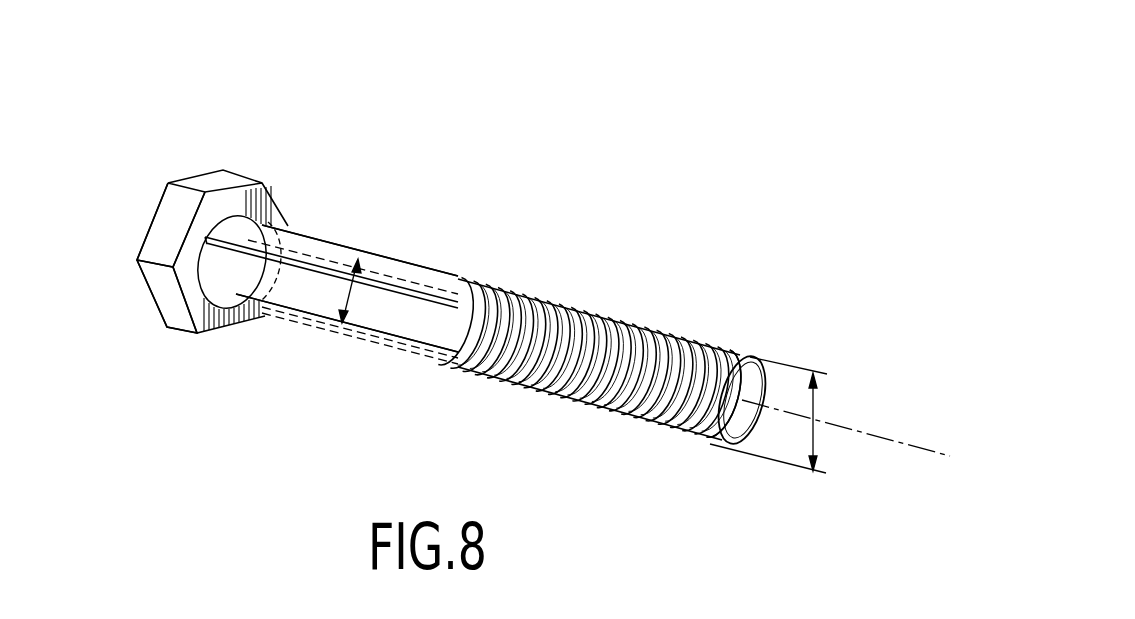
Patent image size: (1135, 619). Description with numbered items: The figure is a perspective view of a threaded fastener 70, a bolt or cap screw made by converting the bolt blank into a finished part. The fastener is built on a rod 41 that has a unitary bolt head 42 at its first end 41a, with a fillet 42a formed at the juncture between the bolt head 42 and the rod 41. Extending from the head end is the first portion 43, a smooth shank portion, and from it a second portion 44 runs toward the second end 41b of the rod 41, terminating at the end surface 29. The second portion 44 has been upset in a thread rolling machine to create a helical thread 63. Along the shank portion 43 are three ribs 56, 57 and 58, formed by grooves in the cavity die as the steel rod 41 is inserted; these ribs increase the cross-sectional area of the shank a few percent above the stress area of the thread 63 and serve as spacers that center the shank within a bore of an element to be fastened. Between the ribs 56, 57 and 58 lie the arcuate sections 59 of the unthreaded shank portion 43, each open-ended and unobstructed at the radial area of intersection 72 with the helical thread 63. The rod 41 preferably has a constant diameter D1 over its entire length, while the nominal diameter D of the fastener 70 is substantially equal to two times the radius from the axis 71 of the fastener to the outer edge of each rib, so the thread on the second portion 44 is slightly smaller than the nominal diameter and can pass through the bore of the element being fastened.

The bolt head 42 is at (268, 185).
The first end 41a is at (200, 247).
The fillet 42a is at (197, 293).
The rod 41 is at (396, 345).
The threaded fastener 70 is at (420, 251).
The first portion 43 is at (385, 240).
The rib 57 is at (333, 238).
The rib 56 is at (373, 292).
The rib 58 is at (430, 353).
The arcuate sections 59 is at (440, 276).
The diameter D1 is at (342, 320).
The helical thread 63 is at (643, 320).
The radial area of intersection 72 is at (474, 276).
The second portion 44 is at (700, 353).
The end surface 29 is at (753, 383).
The second end 41b is at (705, 442).
The axis 71 is at (908, 450).
The diameter D is at (813, 407).